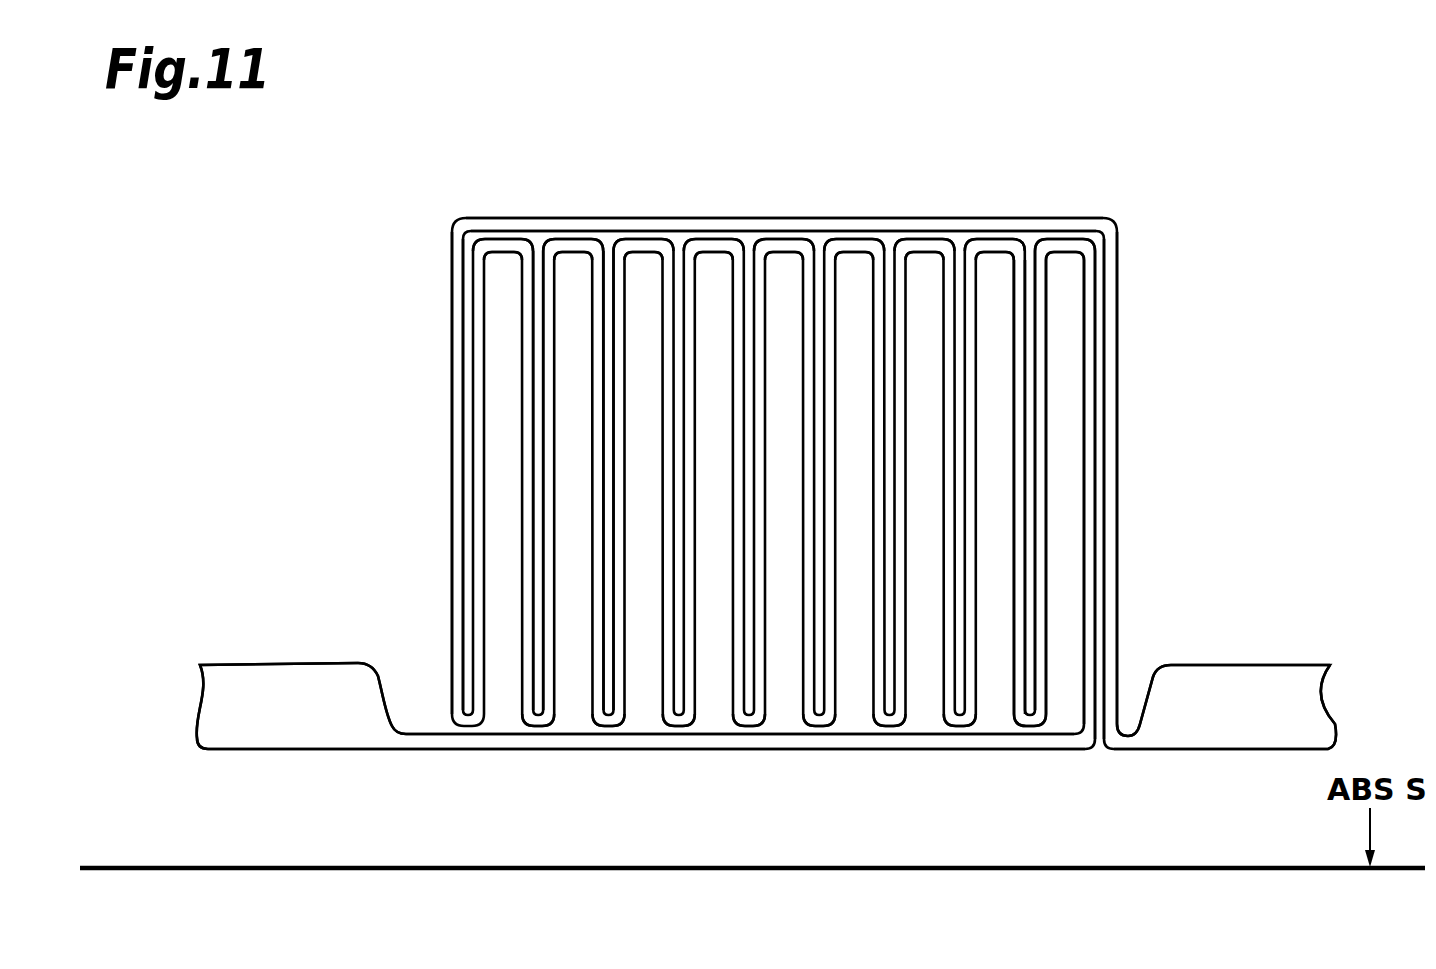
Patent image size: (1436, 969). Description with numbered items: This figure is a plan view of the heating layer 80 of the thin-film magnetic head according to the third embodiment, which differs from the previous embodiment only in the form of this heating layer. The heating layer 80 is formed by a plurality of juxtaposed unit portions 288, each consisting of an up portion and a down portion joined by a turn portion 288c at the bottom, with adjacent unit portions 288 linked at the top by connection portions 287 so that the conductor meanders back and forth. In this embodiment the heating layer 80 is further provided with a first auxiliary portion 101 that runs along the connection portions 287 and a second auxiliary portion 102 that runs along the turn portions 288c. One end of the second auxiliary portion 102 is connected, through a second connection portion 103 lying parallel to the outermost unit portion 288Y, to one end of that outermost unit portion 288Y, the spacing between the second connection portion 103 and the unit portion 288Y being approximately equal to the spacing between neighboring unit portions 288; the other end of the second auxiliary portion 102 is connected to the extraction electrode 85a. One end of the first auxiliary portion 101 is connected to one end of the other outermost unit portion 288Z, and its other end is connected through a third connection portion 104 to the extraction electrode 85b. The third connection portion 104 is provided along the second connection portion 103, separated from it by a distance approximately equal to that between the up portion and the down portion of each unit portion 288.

The heating layer 80 is at (318, 489).
The first auxiliary portion 101 is at (746, 226).
The second auxiliary portion 102 is at (853, 742).
The second connection portion 103 is at (1088, 493).
The third connection portion 104 is at (1112, 441).
The connection portions 287 is at (500, 243).
The unit portions 288 is at (592, 303).
The turn portions 288c is at (677, 730).
The outermost unit portion 288Z is at (451, 407).
The outermost unit portion 288Y is at (1047, 410).
The extraction electrode 85a is at (282, 678).
The extraction electrode 85b is at (1256, 678).